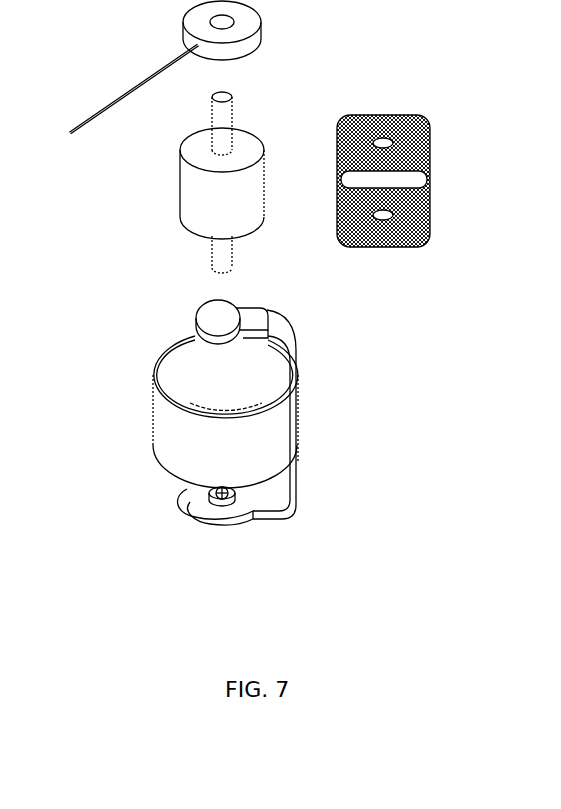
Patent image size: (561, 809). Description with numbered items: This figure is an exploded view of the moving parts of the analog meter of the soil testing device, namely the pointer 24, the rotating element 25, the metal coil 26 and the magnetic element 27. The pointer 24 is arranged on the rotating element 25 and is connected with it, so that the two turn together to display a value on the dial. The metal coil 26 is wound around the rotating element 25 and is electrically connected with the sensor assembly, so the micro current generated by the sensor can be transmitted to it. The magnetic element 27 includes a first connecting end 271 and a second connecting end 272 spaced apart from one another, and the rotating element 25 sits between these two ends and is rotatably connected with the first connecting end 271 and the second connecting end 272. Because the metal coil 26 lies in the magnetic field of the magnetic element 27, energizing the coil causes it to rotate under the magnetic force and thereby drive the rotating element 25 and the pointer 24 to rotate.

The pointer 24 is at (130, 90).
The rotating element 25 is at (195, 183).
The metal coil 26 is at (428, 233).
The magnetic element 27 is at (178, 435).
The first connecting end 271 is at (218, 323).
The second connecting end 272 is at (185, 527).